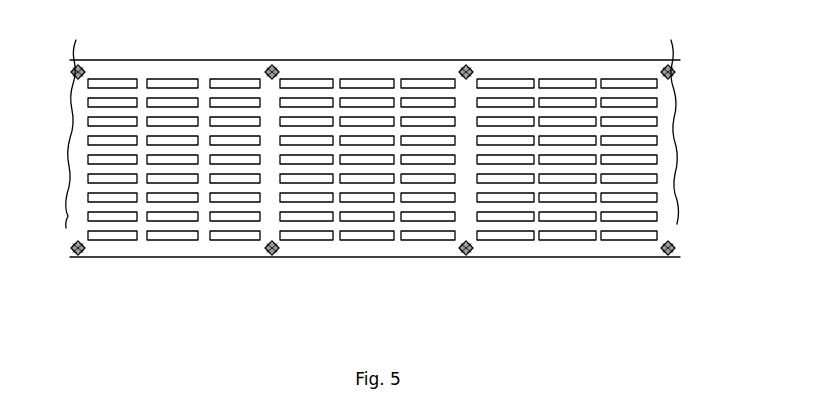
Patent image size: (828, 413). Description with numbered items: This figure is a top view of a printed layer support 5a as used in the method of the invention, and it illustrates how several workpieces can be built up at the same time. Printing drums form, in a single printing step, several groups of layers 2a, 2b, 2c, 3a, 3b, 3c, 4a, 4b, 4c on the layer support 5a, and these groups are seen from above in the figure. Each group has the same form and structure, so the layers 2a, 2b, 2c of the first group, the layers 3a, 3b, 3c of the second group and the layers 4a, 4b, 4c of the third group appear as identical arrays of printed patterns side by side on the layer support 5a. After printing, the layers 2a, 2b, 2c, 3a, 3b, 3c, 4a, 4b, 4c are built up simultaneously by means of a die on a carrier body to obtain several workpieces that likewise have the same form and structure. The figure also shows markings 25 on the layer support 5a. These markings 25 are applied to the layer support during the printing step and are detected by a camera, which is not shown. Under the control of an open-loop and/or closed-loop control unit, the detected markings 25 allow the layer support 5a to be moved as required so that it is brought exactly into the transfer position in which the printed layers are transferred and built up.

The layer 2a is at (118, 82).
The layer 2b is at (172, 82).
The layer 2c is at (232, 82).
The layer 3a is at (311, 82).
The layer 3b is at (365, 82).
The layer 3c is at (428, 82).
The layer 4a is at (515, 82).
The layer 4b is at (565, 82).
The layer 4c is at (622, 82).
The layer support 5a is at (160, 256).
The markings 25 is at (274, 252).